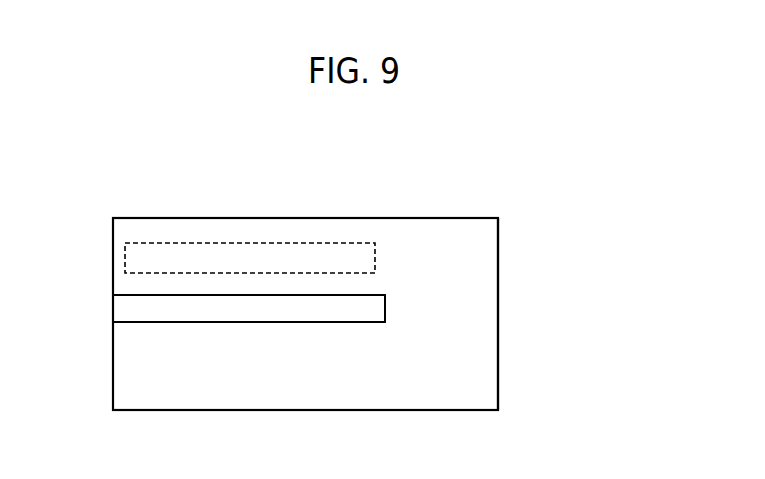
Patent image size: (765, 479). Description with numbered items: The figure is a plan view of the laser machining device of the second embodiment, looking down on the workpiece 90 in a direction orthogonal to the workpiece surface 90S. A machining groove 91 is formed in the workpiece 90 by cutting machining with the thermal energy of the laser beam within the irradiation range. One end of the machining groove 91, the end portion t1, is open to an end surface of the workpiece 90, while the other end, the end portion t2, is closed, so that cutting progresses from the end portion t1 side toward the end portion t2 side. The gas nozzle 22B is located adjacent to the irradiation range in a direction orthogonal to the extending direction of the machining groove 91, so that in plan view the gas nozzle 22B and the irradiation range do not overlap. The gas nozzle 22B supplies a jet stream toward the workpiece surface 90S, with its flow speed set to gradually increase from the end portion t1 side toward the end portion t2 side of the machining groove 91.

The workpiece 90 is at (499, 342).
The workpiece surface 90S is at (483, 260).
The machining groove 91 is at (247, 298).
The gas nozzle 22B is at (325, 243).
The end portion t1 is at (113, 310).
The end portion t2 is at (385, 310).